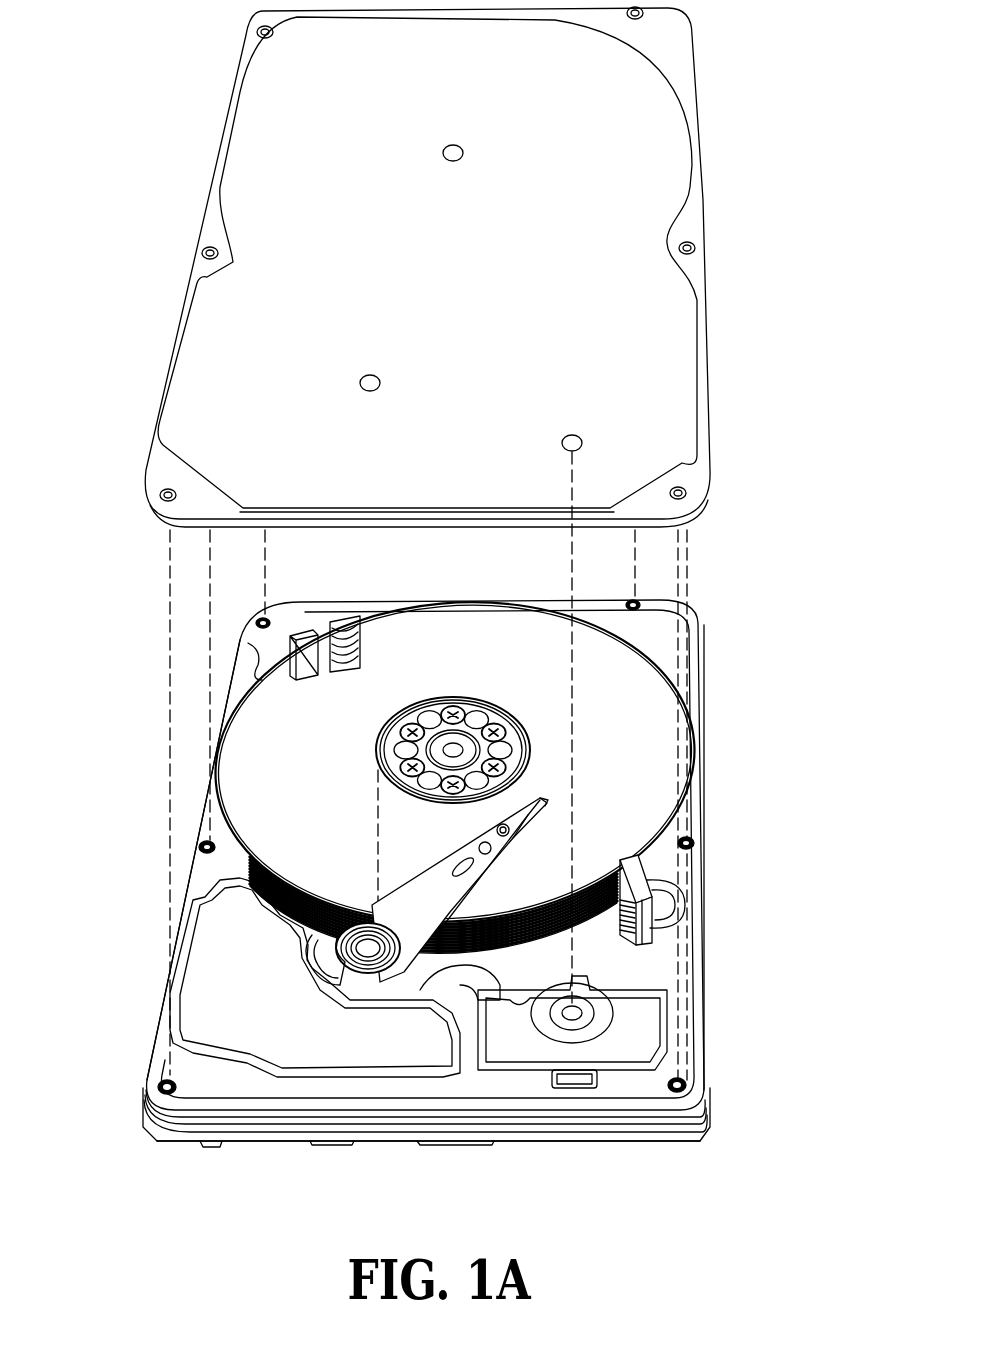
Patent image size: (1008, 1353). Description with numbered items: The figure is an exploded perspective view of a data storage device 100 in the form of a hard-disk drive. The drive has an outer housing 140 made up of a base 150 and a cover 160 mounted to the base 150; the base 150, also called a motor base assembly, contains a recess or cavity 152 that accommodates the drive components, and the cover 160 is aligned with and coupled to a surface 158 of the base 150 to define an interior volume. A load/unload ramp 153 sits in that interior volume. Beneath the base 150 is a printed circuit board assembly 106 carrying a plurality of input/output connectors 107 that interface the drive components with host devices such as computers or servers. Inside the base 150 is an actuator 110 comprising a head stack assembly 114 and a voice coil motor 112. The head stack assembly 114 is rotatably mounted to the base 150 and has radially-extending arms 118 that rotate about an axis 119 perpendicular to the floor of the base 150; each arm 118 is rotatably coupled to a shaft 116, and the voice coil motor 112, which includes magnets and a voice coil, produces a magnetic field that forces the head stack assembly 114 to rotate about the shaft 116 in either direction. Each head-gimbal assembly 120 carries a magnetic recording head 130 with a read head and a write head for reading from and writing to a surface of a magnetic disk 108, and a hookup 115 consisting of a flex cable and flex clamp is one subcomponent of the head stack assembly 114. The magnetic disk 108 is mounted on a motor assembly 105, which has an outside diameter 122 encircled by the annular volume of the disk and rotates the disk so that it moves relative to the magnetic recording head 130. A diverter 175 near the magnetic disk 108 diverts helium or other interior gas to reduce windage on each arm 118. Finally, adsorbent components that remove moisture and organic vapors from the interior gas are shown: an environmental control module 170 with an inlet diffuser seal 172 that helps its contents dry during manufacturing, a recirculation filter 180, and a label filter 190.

The data storage device 100 is at (163, 73).
The cover 160 is at (461, 280).
The housing 140 is at (717, 809).
The surface 158 is at (658, 628).
The recirculation filter 180 is at (298, 640).
The diverter 175 is at (342, 613).
The motor assembly 105 is at (382, 720).
The outside diameter 122 is at (525, 779).
The magnetic disk 108 is at (638, 759).
The axis 119 is at (375, 821).
The radially-extending arm 118 is at (428, 903).
The shaft 116 is at (369, 947).
The magnetic recording head 130 is at (546, 799).
The head-gimbal assembly 120 is at (528, 813).
The head stack assembly 114 is at (322, 950).
The voice coil motor 112 is at (271, 1009).
The hookup 115 is at (450, 965).
The actuator 110 is at (510, 948).
The load/unload ramp 153 is at (640, 876).
The cavity 152 is at (225, 850).
The environmental control module 170 is at (655, 1031).
The inlet diffuser seal 172 is at (550, 1030).
The base 150 is at (150, 1028).
The printed circuit board assembly 106 is at (281, 1150).
The input/output connectors 107 is at (313, 1143).
The label filter 190 is at (575, 1092).